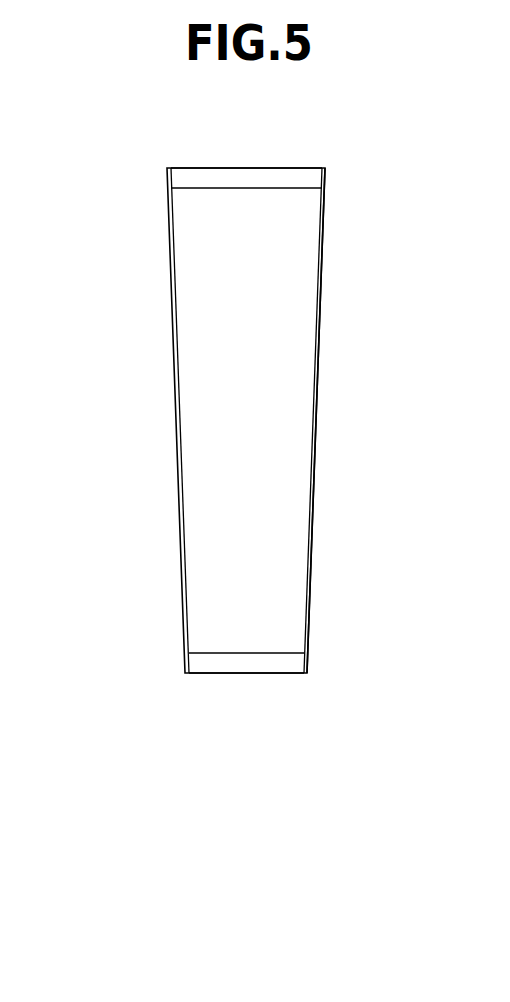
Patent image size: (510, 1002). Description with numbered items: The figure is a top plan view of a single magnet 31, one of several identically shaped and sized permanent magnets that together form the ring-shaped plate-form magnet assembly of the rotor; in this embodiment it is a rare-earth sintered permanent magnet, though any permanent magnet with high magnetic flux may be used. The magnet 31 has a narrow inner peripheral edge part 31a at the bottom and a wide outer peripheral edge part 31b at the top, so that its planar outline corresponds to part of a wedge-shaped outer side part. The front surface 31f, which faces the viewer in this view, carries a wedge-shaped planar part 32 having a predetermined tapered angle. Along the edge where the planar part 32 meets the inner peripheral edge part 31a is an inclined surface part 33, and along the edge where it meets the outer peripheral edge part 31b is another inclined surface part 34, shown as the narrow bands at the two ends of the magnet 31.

The magnet 31 is at (173, 360).
The inner peripheral edge part 31a is at (243, 673).
The outer peripheral edge part 31b is at (228, 168).
The front surface 31f is at (269, 304).
The wedge-shaped planar part 32 is at (283, 443).
The inclined surface part 33 is at (283, 665).
The inclined surface part 34 is at (308, 181).